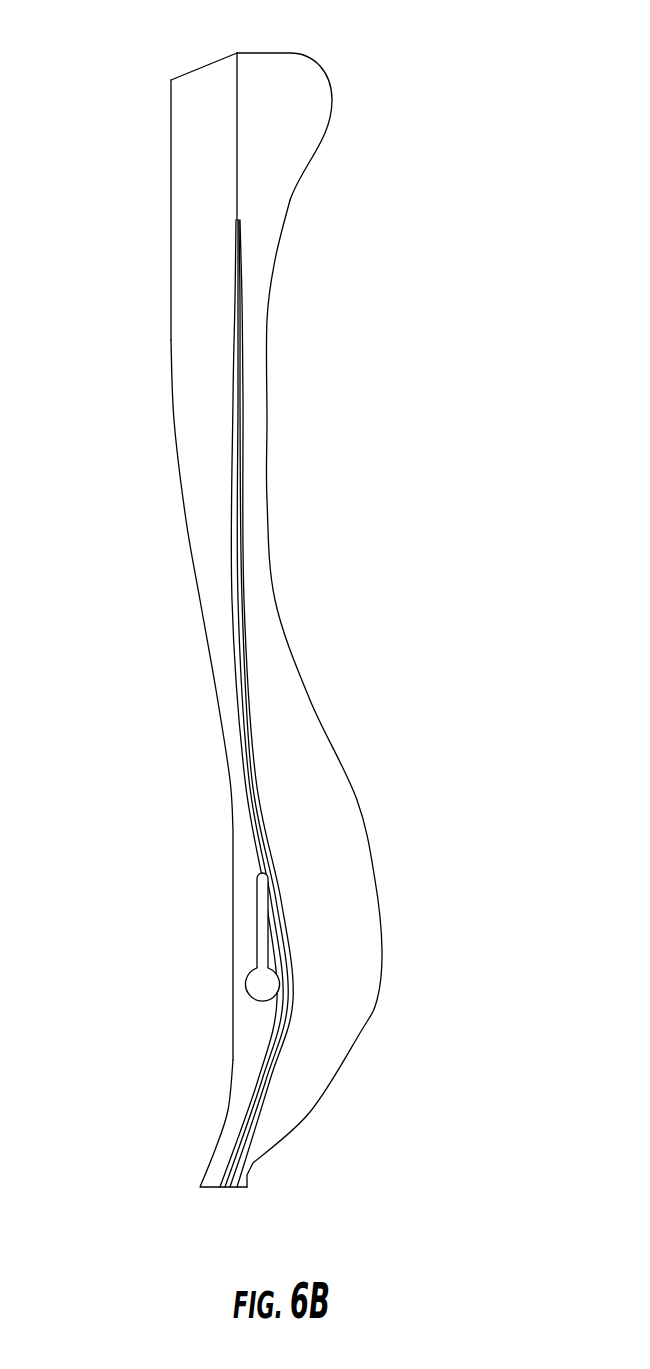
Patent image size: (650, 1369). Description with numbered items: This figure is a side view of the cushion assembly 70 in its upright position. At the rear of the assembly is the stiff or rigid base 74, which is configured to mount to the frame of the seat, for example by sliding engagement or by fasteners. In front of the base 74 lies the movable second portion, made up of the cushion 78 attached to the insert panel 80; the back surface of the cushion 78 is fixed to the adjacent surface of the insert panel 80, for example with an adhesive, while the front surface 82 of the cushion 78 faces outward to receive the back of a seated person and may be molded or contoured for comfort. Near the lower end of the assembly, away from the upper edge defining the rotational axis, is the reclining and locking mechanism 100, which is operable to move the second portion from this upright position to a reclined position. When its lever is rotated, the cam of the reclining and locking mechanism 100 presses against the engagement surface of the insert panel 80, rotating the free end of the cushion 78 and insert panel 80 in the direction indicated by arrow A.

The cushion assembly 70 is at (263, 593).
The base 74 is at (207, 373).
The cushion 78 is at (296, 712).
The insert panel 80 is at (223, 580).
The front surface 82 is at (376, 815).
The reclining and locking mechanism 100 is at (240, 980).
The arrow A is at (302, 1103).